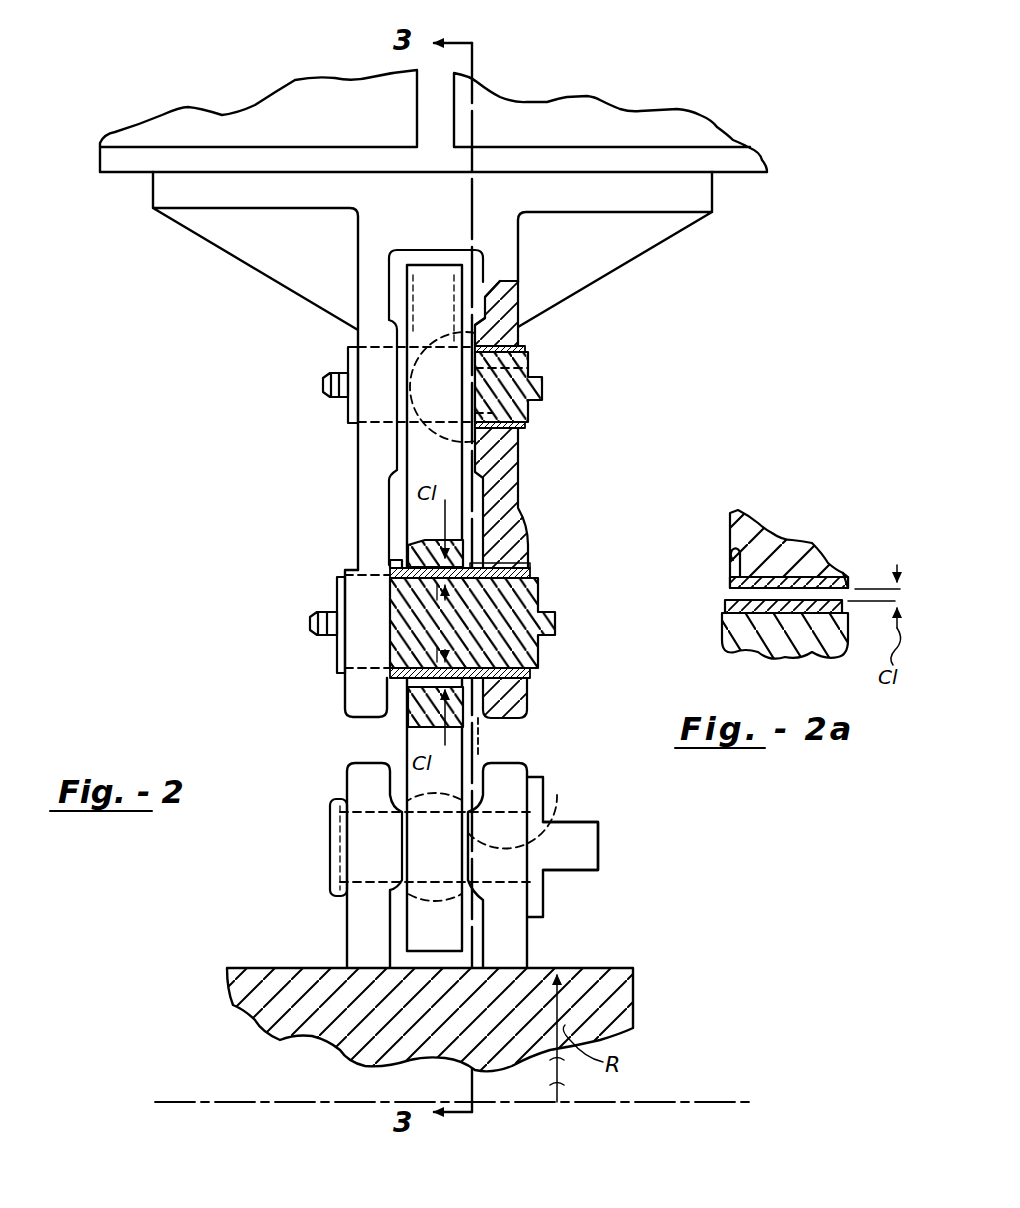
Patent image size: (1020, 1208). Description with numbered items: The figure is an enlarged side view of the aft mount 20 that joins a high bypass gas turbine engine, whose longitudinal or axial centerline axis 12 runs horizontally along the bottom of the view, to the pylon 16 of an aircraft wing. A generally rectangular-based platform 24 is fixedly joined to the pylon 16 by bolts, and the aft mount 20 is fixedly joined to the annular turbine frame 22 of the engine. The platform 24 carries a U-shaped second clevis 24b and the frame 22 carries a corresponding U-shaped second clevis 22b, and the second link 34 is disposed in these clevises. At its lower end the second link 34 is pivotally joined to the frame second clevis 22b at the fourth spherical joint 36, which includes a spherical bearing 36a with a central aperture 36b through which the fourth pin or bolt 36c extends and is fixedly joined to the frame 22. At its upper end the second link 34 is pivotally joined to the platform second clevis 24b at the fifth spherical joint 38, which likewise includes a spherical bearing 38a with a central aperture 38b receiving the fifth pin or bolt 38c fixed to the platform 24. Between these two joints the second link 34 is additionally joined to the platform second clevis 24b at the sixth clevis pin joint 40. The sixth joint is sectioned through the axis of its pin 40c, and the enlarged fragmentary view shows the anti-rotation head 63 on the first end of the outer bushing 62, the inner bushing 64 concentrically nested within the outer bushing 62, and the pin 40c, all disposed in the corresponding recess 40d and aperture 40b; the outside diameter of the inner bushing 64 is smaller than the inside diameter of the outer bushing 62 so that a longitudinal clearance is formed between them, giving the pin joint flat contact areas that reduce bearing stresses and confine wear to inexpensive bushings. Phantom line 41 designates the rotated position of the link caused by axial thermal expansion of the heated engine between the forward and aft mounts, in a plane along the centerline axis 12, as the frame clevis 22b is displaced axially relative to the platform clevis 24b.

In FIG. 2, the longitudinal or axial centerline axis 12 is at (652, 1102).
In FIG. 2, the pylon 16 is at (766, 160).
In FIG. 2, the aft mount 20 is at (258, 578).
In FIG. 2, the annular turbine frame 22 is at (606, 962).
In FIG. 2, the second U-shaped clevis of the frame 22b is at (535, 962).
In FIG. 2, the platform 24 is at (715, 190).
In FIG. 2, the second U-shaped clevis of the platform 24b is at (520, 465).
In FIG. 2, the second link 34 is at (400, 500).
In FIG. 2, the fourth spherical joint 36 is at (324, 846).
In FIG. 2, the spherical bearing 36a is at (408, 880).
In FIG. 2, the central aperture 36b is at (540, 797).
In FIG. 2, the fourth pin or bolt 36c is at (545, 822).
In FIG. 2, the fifth spherical joint 38 is at (376, 438).
In FIG. 2, the spherical bearing 38a is at (520, 318).
In FIG. 2, the central aperture 38b is at (528, 350).
In FIG. 2, the fifth pin or bolt 38c is at (525, 410).
In FIG. 2, the sixth clevis pin joint 40 is at (324, 652).
In FIG. 2, the aperture 40b is at (392, 570).
In FIG. 2a, the aperture 40b is at (846, 568).
In FIG. 2, the pin 40c is at (540, 595).
In FIG. 2a, the pin 40c is at (792, 655).
In FIG. 2, the recess 40d is at (412, 562).
In FIG. 2a, the recess 40d is at (735, 545).
In FIG. 2, the rotated position of the link 41 is at (490, 745).
In FIG. 2a, the outer bushing 62 is at (842, 580).
In FIG. 2a, the anti-rotation head 63 is at (730, 565).
In FIG. 2, the inner bushing 64 is at (522, 565).
In FIG. 2a, the inner bushing 64 is at (725, 606).